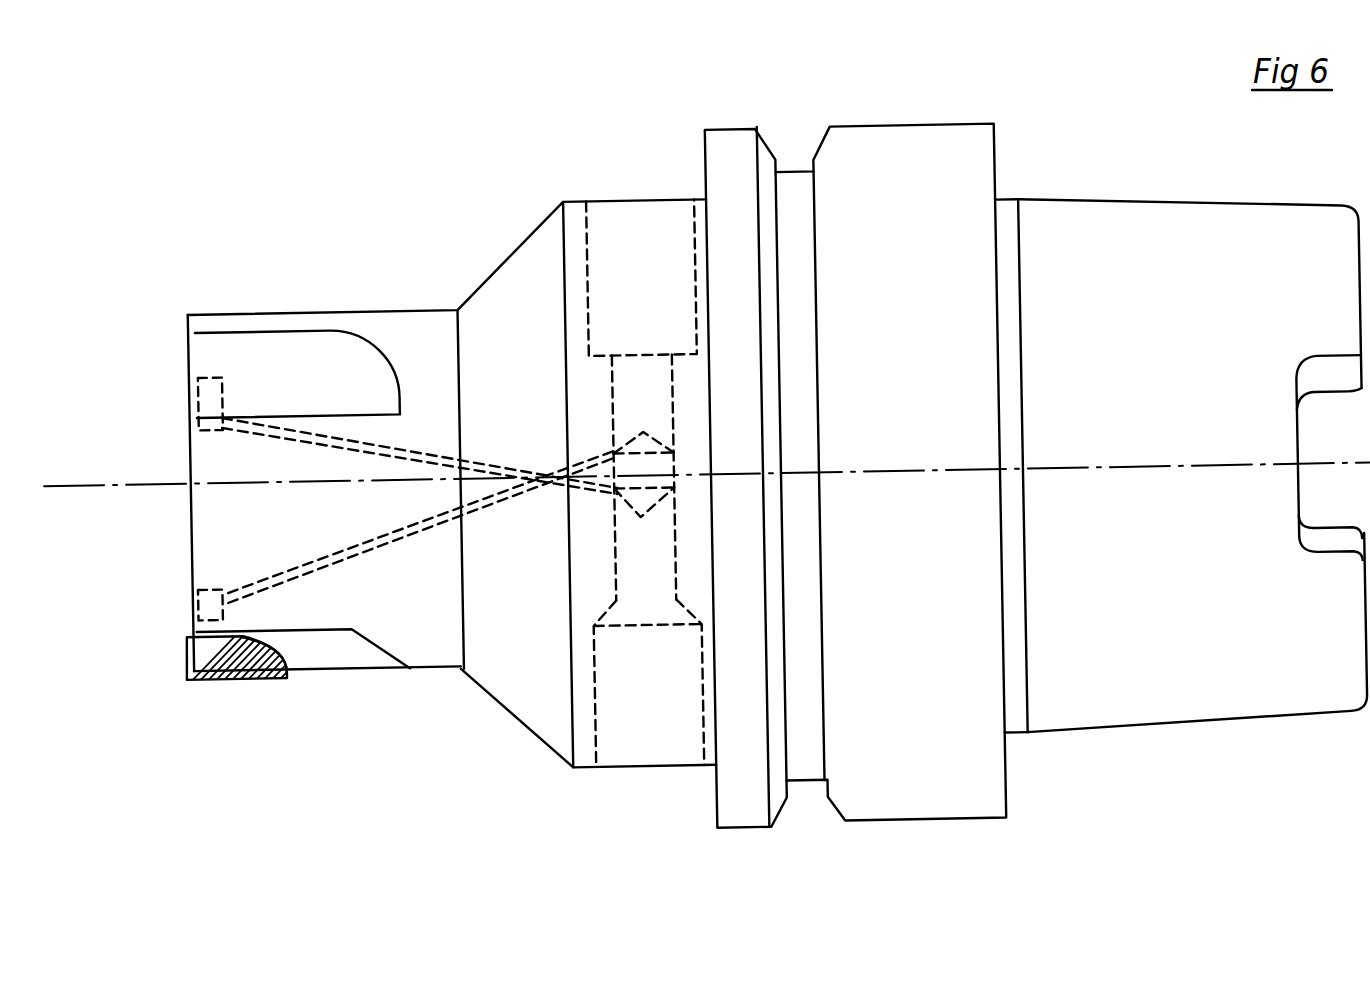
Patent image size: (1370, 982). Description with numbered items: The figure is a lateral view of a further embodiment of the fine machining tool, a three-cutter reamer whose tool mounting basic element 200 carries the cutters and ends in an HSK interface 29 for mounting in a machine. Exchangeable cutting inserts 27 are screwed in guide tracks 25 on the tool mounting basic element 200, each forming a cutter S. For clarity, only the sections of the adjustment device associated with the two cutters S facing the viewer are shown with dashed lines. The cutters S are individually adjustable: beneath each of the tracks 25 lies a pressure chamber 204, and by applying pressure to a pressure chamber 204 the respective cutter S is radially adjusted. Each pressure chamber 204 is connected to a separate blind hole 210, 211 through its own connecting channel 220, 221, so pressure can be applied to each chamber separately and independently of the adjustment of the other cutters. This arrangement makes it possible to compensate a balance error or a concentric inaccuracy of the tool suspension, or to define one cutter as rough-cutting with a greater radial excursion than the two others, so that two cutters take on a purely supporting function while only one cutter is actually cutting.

The tool mounting basic element 200 is at (499, 336).
The blind hole 210 is at (641, 226).
The blind hole 211 is at (620, 727).
The connecting channel 220 is at (420, 445).
The connecting channel 221 is at (436, 525).
The pressure chamber 204 is at (201, 389).
The guide track 25 is at (309, 351).
The cutting insert 27 is at (254, 674).
The cutter S is at (214, 676).
The HSK interface 29 is at (1212, 656).